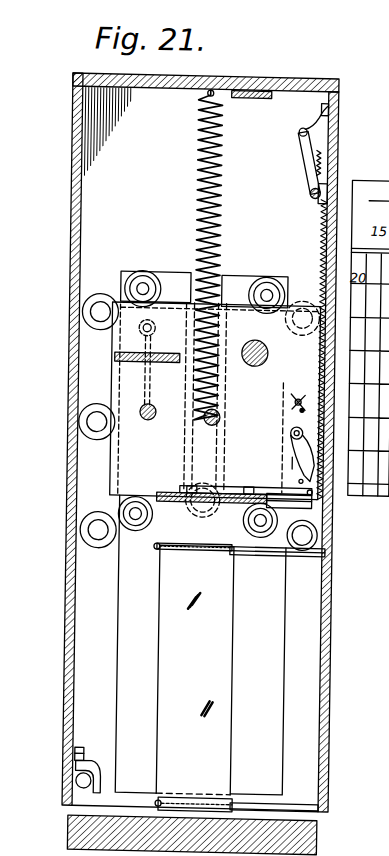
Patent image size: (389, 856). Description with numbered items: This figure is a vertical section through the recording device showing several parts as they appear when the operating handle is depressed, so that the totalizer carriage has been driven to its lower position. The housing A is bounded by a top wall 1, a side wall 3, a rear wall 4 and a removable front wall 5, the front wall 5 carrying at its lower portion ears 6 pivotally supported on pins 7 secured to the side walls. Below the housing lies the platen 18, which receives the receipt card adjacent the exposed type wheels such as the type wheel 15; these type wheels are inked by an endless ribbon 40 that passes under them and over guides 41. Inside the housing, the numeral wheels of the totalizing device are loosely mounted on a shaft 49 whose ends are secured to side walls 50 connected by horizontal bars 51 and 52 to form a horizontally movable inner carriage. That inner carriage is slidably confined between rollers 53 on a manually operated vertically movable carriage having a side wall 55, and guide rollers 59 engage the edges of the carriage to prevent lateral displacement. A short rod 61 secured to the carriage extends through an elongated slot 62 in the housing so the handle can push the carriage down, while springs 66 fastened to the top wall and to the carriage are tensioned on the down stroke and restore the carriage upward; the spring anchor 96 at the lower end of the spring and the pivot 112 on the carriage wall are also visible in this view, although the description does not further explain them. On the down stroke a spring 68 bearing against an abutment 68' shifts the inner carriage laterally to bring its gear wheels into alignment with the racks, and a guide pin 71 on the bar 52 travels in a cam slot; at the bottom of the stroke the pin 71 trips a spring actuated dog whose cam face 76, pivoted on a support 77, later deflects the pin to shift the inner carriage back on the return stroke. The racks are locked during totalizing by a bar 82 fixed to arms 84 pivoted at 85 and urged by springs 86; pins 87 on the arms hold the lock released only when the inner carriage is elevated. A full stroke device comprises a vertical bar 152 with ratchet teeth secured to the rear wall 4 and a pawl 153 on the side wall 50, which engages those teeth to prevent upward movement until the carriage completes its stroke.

The top wall 1 is at (97, 73).
The housing A is at (335, 74).
The side wall 3 is at (108, 204).
The rear wall 4 is at (338, 736).
The removable front wall 5 is at (75, 619).
The ears 6 is at (110, 782).
The pins 7 is at (86, 782).
The type wheel 15 is at (298, 458).
The platen 18 is at (79, 833).
The endless ribbon 40 is at (195, 670).
The guides 41 is at (197, 545).
The shaft 49 is at (260, 362).
The side walls 50 is at (129, 461).
The horizontal bar 51 is at (118, 355).
The horizontal bar 52 is at (174, 490).
The rollers 53 is at (147, 270).
The side wall 55 is at (282, 703).
The guide rollers 59 is at (307, 297).
The short rod 61 is at (211, 480).
The elongated slot 62 is at (188, 437).
The springs 66 is at (198, 157).
The spring 68 is at (89, 369).
The abutment 68' is at (157, 356).
The guide pin 71 is at (332, 500).
The cam face 76 is at (305, 476).
The support 77 is at (296, 428).
The bar 82 is at (324, 160).
The arms 84 is at (305, 160).
The pivot 85 is at (316, 196).
The springs 86 is at (323, 124).
The pins 87 is at (300, 127).
The spring anchor 96 is at (225, 409).
The pivot 112 is at (148, 406).
The vertical bar 152 is at (323, 232).
The pawl 153 is at (301, 391).